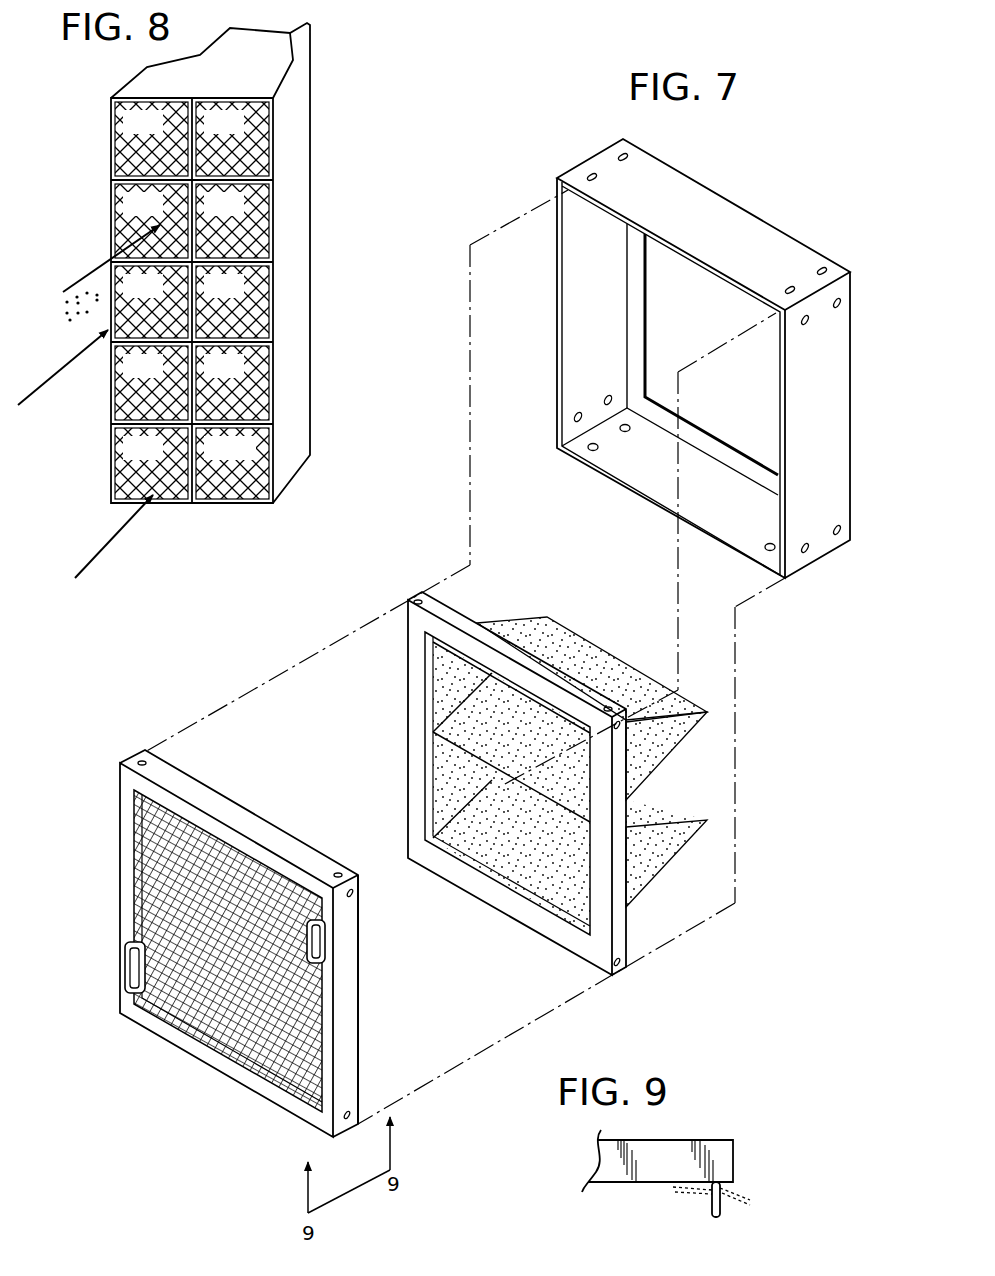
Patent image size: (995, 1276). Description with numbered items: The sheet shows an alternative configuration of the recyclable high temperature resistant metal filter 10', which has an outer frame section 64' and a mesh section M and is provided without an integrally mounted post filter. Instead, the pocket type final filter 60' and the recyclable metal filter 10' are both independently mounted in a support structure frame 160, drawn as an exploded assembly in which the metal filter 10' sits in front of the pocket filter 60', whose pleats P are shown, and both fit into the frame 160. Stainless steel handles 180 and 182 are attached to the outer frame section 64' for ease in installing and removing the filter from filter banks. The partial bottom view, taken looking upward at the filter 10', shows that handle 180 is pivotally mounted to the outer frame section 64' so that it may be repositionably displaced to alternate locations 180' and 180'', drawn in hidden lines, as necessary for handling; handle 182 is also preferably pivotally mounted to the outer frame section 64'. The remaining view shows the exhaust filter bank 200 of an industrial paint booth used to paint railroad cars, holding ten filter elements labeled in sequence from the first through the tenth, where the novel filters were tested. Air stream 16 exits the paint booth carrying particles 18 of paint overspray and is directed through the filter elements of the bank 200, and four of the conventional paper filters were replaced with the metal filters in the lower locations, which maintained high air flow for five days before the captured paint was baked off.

In FIG. 8, the exhaust filter bank 200 is at (292, 147).
In FIG. 8, the air stream 16 is at (100, 259).
In FIG. 8, the particles 18 is at (62, 313).
In FIG. 7, the support structure frame 160 is at (703, 186).
In FIG. 7, the filter pleats P is at (698, 722).
In FIG. 7, the pocket type final filter 60' is at (567, 783).
In FIG. 7, the outer frame section 64' is at (248, 943).
In FIG. 9, the outer frame section 64' is at (675, 1147).
In FIG. 7, the mesh section M is at (230, 1030).
In FIG. 7, the stainless steel handle 180 is at (357, 949).
In FIG. 9, the stainless steel handle 180 is at (688, 1225).
In FIG. 7, the stainless steel handle 182 is at (141, 1028).
In FIG. 7, the recyclable metal filter 10' is at (394, 999).
In FIG. 9, the handle position 180' is at (664, 1211).
In FIG. 9, the handle position 180'' is at (767, 1213).